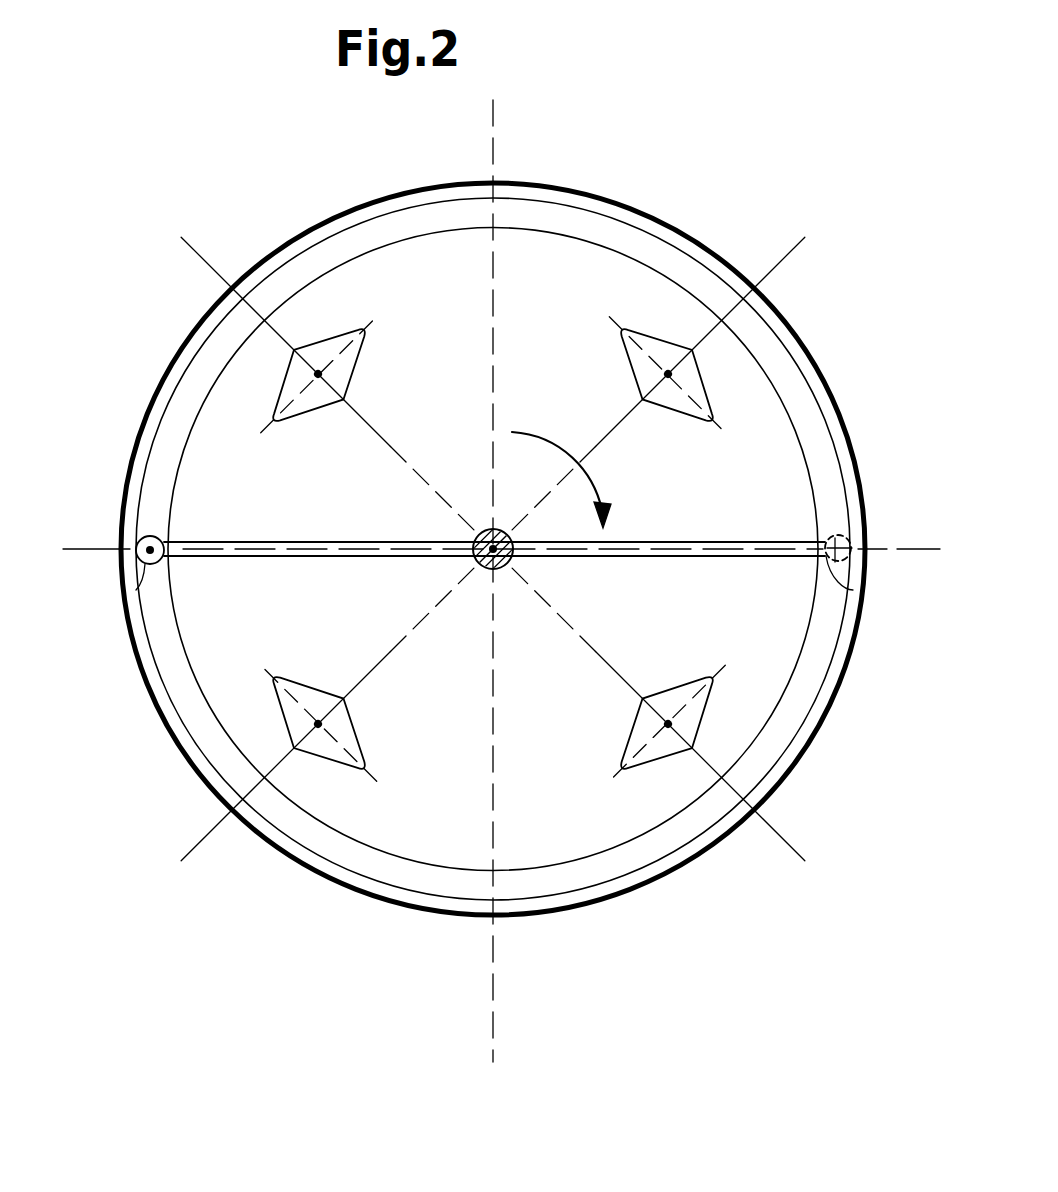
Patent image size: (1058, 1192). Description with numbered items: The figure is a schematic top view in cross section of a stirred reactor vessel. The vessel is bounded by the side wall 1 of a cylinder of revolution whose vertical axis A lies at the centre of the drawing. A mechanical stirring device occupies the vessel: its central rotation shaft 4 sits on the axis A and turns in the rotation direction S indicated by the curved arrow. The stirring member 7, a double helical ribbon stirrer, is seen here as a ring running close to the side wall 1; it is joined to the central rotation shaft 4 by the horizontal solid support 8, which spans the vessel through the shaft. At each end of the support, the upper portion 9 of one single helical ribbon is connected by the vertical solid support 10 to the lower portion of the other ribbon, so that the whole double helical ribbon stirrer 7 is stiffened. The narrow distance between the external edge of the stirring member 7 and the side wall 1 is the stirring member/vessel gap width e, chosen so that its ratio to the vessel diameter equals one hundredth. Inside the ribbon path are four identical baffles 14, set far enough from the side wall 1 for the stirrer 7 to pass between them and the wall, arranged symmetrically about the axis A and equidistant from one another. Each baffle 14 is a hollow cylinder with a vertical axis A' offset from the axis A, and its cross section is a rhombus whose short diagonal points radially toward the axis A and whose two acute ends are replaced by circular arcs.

The side wall 1 is at (840, 402).
The central rotation shaft 4 is at (490, 569).
The stirring member 7 is at (670, 260).
The horizontal solid support 8 is at (376, 557).
The upper portion 9 is at (156, 564).
The vertical solid support 10 is at (136, 590).
The baffle 14 is at (362, 364).
The stirring member/vessel gap width e is at (388, 203).
The vertical axis A is at (549, 581).
The vertical axis A' is at (493, 528).
The rotation direction S is at (568, 450).